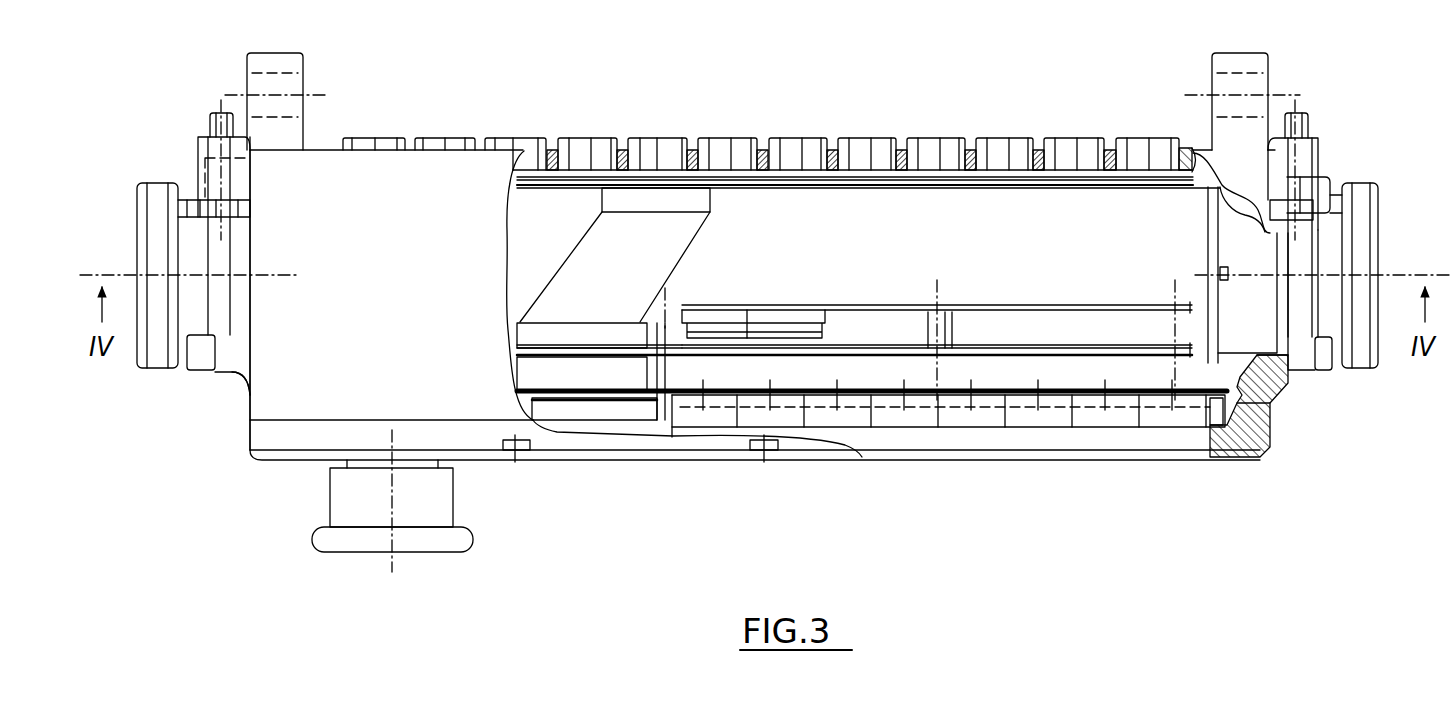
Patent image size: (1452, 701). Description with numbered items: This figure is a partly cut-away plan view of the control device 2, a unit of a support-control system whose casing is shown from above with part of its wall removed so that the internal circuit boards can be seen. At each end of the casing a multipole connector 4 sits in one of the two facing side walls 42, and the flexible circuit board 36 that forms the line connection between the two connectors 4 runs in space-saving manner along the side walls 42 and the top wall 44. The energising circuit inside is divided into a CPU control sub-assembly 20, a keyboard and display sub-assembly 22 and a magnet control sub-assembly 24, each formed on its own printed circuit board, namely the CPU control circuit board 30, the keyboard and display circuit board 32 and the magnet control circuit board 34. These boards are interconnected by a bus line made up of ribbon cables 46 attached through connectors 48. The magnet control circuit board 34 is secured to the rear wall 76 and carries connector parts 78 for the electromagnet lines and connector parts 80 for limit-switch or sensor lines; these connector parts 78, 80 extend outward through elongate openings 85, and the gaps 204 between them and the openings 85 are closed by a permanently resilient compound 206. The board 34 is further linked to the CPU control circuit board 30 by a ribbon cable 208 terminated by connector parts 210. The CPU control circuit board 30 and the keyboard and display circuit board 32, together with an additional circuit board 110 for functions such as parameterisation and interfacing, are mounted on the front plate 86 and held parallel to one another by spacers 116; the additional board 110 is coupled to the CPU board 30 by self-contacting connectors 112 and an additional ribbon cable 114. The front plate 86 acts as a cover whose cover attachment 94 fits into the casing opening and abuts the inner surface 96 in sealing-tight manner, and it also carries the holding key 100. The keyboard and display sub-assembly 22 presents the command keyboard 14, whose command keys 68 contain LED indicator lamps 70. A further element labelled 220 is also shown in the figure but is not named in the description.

The control device 2 is at (1113, 470).
The multipole connector 4 is at (150, 372).
The command keyboard 14 is at (712, 416).
The CPU control sub-assembly 20 is at (1060, 354).
The keyboard and display sub-assembly 22 is at (1015, 398).
The magnet control sub-assembly 24 is at (923, 177).
The CPU control circuit board 30 is at (1035, 320).
The keyboard and display circuit board 32 is at (980, 397).
The magnet control circuit board 34 is at (979, 185).
The flexible circuit board 36 is at (1207, 220).
The side wall 42 is at (248, 403).
The top wall 44 is at (368, 288).
The ribbon cable 46 is at (552, 280).
The connector 48 is at (575, 312).
The command key 68 is at (828, 418).
The LED indicator lamp 70 is at (953, 403).
The rear wall 76 is at (1192, 170).
The connector part 78 is at (813, 138).
The connector part 80 is at (867, 138).
The opening 85 is at (1110, 137).
The front plate 86 is at (1257, 457).
The cover attachment 94 is at (1242, 403).
The inner surface 96 is at (1272, 413).
The holding key 100 is at (325, 503).
The additional circuit board 110 is at (1110, 320).
The self-contacting connector 112 is at (747, 320).
The additional ribbon cable 114 is at (775, 320).
The spacer 116 is at (928, 372).
The gap 204 is at (692, 138).
The permanently resilient compound 206 is at (710, 157).
The ribbon cable 208 is at (633, 284).
The connector part 210 is at (633, 202).
The plate 220 is at (1163, 180).